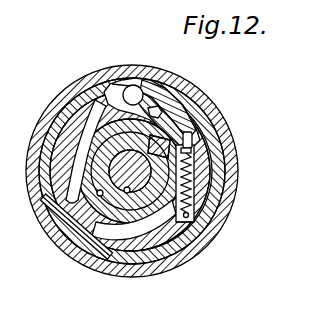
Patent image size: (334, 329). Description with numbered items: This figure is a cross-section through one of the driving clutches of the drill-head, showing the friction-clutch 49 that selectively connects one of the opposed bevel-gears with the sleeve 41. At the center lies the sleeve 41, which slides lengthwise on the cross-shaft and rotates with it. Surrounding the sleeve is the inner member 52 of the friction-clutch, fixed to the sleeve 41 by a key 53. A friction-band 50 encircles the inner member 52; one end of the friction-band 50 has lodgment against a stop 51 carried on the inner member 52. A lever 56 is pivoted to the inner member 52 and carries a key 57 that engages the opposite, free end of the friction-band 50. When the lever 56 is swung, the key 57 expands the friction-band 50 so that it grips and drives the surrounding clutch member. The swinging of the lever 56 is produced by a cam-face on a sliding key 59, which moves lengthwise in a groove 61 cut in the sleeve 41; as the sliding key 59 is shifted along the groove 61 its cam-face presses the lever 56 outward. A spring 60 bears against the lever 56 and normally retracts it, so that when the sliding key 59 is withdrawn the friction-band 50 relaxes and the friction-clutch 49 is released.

The sleeve 41 is at (100, 167).
The friction-clutch 49 is at (60, 86).
The friction-band 50 is at (46, 197).
The stop 51 is at (153, 92).
The inner member 52 is at (224, 136).
The key 53 is at (70, 262).
The lever 56 is at (186, 110).
The key 57 is at (134, 93).
The sliding key 59 is at (162, 138).
The spring 60 is at (183, 188).
The groove 61 is at (148, 222).